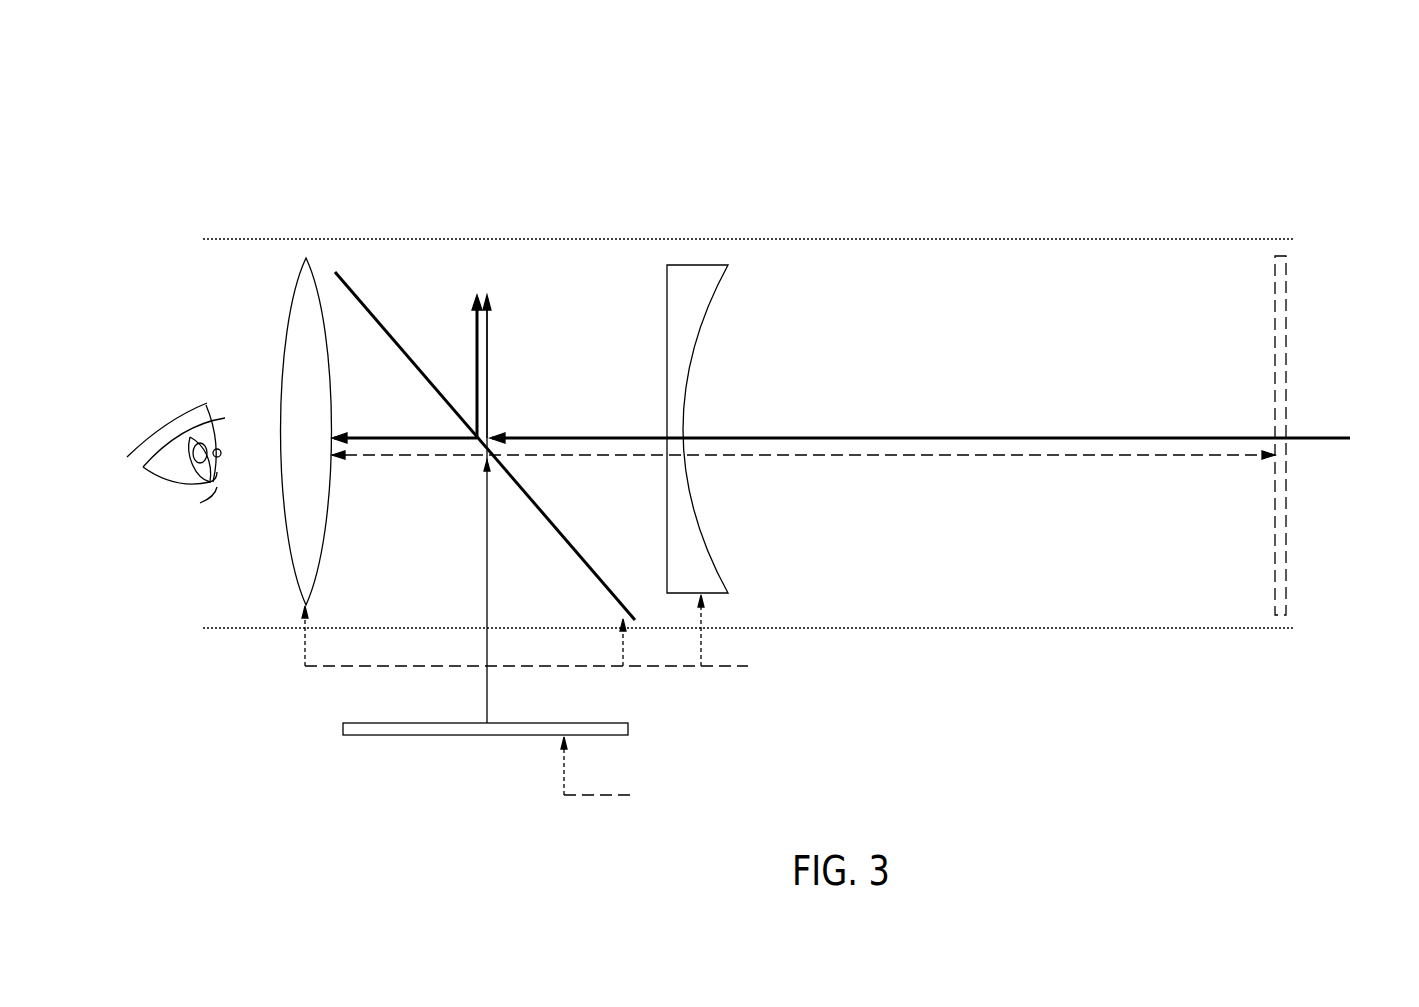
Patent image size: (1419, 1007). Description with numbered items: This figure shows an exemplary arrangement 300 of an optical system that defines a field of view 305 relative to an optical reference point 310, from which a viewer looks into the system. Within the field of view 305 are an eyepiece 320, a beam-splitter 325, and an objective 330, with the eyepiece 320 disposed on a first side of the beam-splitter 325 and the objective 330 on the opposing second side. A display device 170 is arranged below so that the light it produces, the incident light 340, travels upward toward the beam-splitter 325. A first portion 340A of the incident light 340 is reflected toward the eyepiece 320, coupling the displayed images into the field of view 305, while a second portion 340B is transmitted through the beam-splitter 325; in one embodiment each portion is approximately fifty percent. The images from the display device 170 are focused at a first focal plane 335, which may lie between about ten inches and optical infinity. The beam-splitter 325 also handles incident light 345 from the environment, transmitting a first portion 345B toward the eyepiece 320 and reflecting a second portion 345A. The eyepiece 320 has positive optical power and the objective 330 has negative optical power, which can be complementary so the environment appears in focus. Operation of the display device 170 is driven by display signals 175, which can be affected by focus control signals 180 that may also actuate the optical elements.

The arrangement 300 is at (1307, 133).
The field of view 305 is at (192, 307).
The optical reference point 310 is at (228, 446).
The eyepiece 320 is at (288, 560).
The beam-splitter 325 is at (582, 560).
The objective 330 is at (713, 568).
The first focal plane 335 is at (1286, 556).
The incident light 340 is at (484, 597).
The first portion of the incident light 340A is at (452, 458).
The second portion of the incident light 340B is at (488, 380).
The incident light from the environment 345 is at (1311, 436).
The second portion of the incident light from the environment 345A is at (475, 356).
The first portion of the incident light from the environment 345B is at (392, 436).
The focus control signals 180 is at (556, 638).
The display device 170 is at (370, 737).
The display signals 175 is at (620, 773).